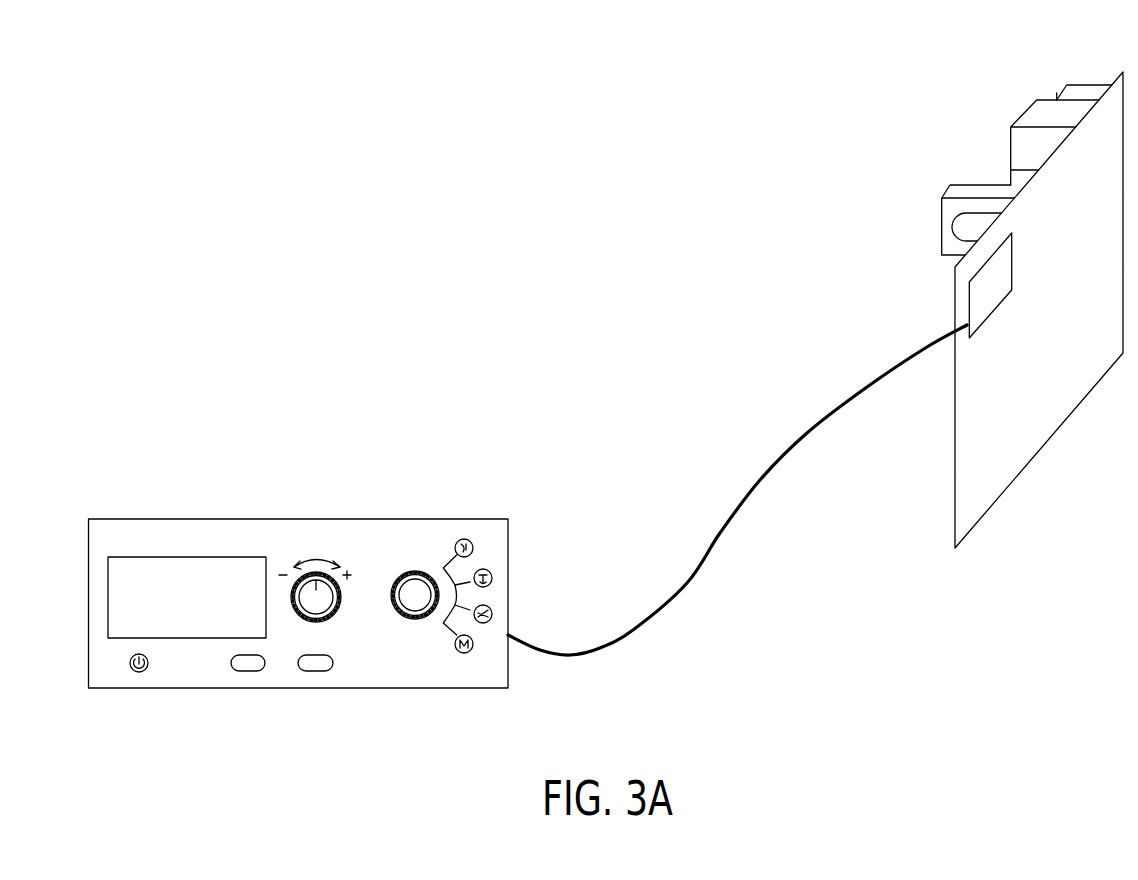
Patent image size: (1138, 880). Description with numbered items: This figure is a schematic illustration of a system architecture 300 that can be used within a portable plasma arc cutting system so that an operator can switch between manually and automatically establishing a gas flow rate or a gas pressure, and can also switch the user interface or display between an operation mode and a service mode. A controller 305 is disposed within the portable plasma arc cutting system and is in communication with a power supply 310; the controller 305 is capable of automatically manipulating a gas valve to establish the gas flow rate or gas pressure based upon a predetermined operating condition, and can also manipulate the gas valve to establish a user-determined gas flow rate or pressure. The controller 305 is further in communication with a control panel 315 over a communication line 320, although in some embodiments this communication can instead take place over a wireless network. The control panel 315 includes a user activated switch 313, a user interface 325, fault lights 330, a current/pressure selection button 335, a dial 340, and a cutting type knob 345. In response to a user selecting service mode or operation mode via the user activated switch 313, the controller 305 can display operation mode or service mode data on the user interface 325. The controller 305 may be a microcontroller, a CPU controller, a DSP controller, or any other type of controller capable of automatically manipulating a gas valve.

The system architecture 300 is at (642, 162).
The controller 305 is at (978, 305).
The power supply 310 is at (1047, 423).
The user activated switch 313 is at (247, 672).
The control panel 315 is at (385, 535).
The communication line 320 is at (682, 590).
The user interface 325 is at (123, 597).
The fault lights 330 is at (139, 672).
The current/pressure selection button 335 is at (315, 672).
The dial 340 is at (316, 590).
The cutting type knob 345 is at (415, 600).